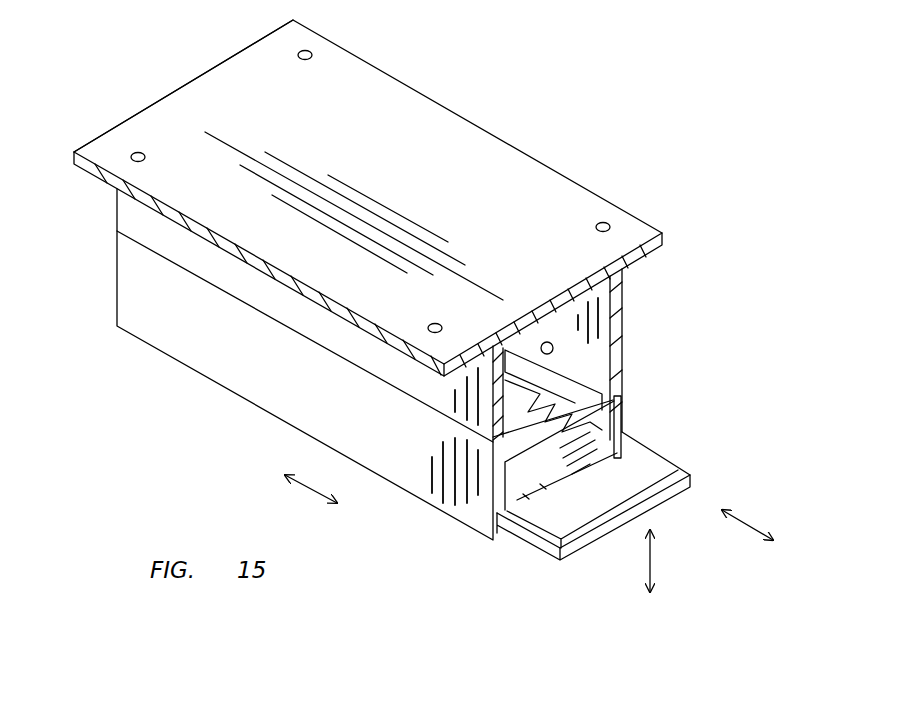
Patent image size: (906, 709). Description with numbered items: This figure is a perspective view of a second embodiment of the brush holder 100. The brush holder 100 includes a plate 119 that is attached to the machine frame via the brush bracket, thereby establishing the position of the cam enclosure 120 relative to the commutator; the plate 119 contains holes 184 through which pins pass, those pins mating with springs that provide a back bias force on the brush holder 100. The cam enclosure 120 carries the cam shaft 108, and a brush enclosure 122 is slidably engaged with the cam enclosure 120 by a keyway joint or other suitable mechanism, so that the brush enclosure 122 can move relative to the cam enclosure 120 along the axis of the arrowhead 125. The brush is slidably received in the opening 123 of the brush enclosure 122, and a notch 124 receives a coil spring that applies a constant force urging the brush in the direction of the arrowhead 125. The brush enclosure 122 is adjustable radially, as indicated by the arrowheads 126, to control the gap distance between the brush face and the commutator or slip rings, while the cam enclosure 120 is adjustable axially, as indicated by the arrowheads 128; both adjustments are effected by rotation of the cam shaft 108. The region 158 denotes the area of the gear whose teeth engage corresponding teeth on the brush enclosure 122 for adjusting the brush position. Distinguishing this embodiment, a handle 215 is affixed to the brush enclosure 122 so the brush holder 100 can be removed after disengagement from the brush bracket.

The brush holder 100 is at (213, 52).
The plate 119 is at (417, 92).
The region 158 is at (155, 101).
The holes 184 is at (311, 50).
The cam enclosure 120 is at (624, 312).
The cam shaft 108 is at (553, 348).
The brush enclosure 122 is at (620, 393).
The notch 124 is at (622, 428).
The handle 215 is at (690, 470).
The opening 123 is at (537, 472).
The arrowhead 125 is at (748, 524).
The arrowheads 128 is at (651, 560).
The arrowheads 126 is at (305, 490).